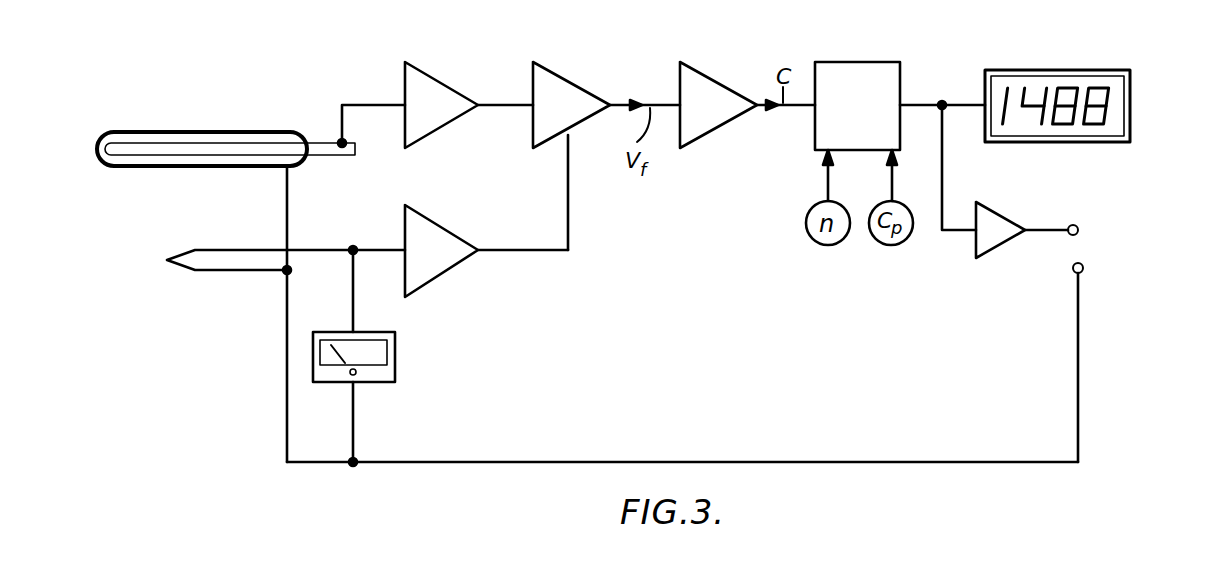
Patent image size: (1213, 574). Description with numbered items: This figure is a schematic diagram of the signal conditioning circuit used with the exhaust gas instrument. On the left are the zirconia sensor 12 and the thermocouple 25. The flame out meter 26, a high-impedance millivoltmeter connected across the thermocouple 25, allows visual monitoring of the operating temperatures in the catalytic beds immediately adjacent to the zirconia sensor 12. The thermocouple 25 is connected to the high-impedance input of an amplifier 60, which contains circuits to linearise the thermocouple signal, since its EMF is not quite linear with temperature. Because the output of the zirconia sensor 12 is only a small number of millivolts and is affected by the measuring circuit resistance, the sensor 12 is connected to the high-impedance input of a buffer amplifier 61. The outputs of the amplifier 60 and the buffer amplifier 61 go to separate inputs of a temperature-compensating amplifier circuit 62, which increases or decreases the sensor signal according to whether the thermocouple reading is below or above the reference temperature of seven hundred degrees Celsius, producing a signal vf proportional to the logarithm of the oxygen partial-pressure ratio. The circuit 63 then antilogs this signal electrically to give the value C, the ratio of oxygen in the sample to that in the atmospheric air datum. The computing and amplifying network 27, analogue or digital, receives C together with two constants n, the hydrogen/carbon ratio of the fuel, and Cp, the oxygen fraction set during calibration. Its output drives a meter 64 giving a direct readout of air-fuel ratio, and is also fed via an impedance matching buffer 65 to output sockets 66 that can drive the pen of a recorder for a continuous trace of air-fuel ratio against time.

The zirconia sensor 12 is at (203, 132).
The thermocouple 25 is at (167, 262).
The flame out meter 26 is at (397, 348).
The computing and amplifying network 27 is at (872, 119).
The amplifier 60 is at (442, 263).
The buffer amplifier 61 is at (442, 118).
The temperature-compensating amplifier circuit 62 is at (580, 85).
The antilogging circuit 63 is at (718, 118).
The meter 64 is at (1132, 87).
The impedance matching buffer 65 is at (997, 210).
The output sockets 66 is at (1080, 250).